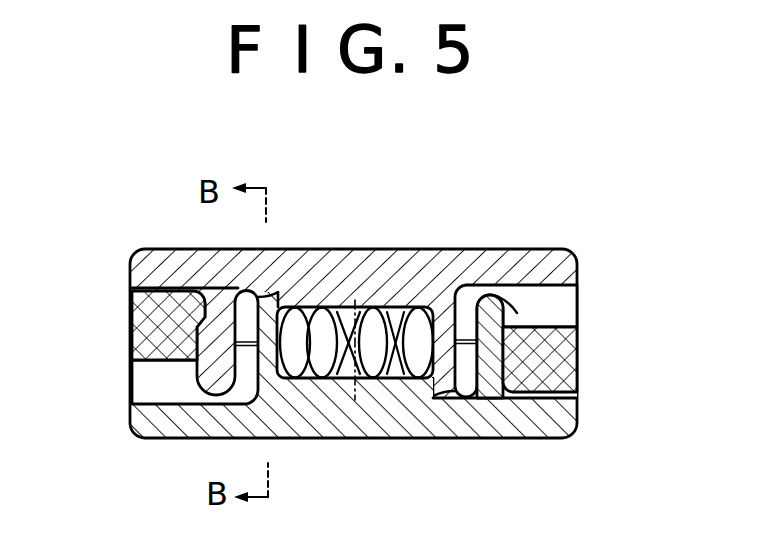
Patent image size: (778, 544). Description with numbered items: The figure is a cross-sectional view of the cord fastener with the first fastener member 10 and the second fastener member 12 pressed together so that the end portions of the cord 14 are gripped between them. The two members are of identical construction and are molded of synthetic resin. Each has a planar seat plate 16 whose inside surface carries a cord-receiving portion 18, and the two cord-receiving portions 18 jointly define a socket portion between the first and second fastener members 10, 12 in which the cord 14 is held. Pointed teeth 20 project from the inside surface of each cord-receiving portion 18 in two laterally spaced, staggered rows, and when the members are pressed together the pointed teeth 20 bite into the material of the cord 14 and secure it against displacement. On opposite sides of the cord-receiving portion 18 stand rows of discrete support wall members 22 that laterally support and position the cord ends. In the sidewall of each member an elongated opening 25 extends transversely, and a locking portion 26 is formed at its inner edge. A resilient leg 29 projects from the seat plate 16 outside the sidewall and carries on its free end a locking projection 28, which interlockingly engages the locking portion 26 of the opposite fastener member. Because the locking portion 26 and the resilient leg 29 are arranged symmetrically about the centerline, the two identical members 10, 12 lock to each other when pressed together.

The first fastener member 10 is at (492, 445).
The second fastener member 12 is at (493, 242).
The cord 14 is at (355, 400).
The seat plate 16 is at (150, 260).
The cord-receiving portion 18 is at (366, 303).
The pointed teeth 20 is at (340, 305).
The support wall members 22 is at (279, 298).
The opening 25 is at (150, 392).
The locking portion 26 is at (156, 334).
The locking projection 28 is at (195, 363).
The resilient leg 29 is at (188, 305).